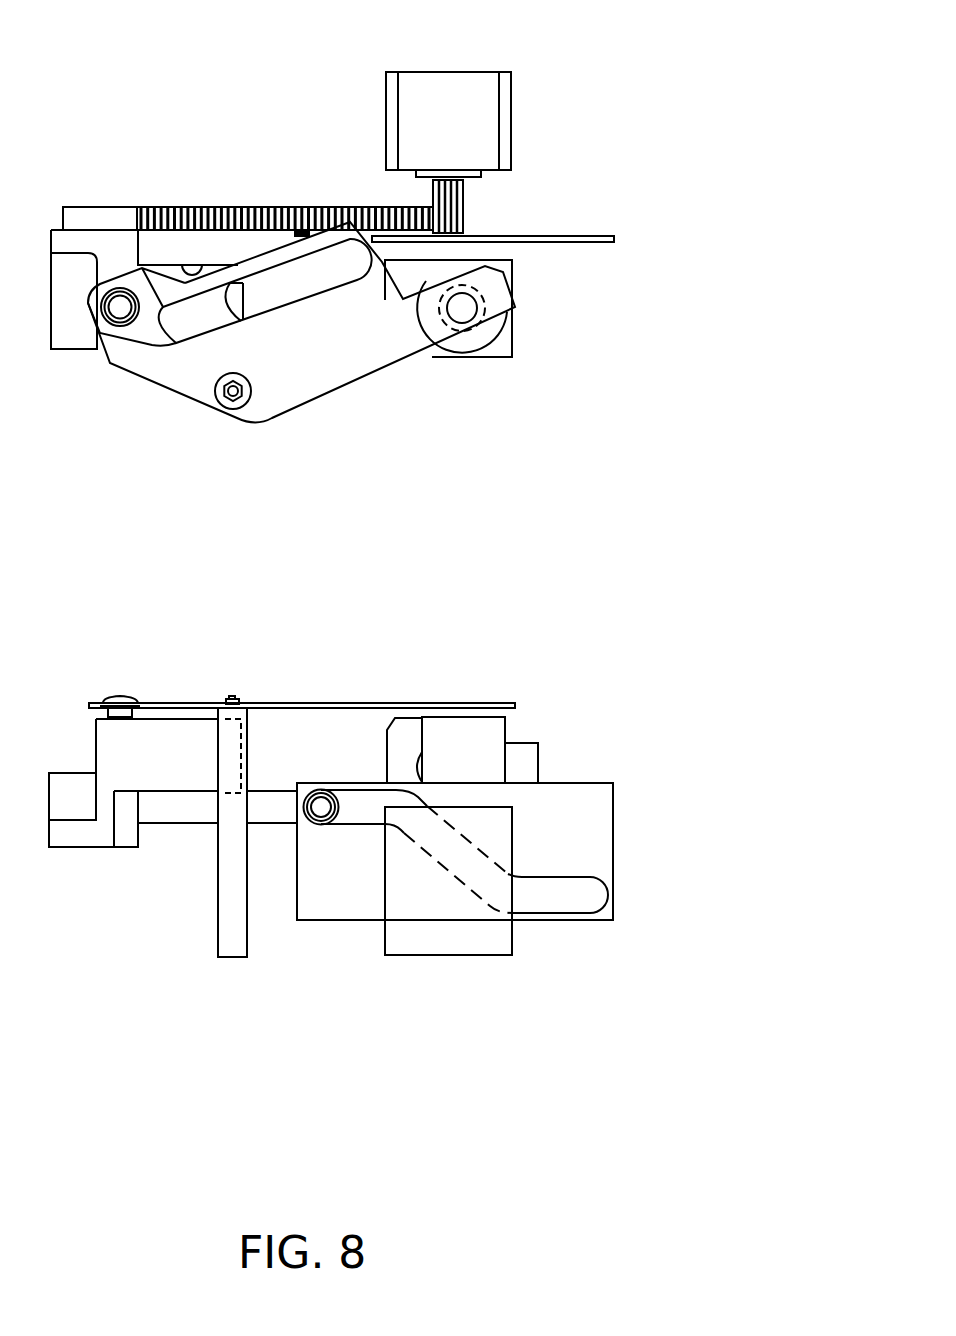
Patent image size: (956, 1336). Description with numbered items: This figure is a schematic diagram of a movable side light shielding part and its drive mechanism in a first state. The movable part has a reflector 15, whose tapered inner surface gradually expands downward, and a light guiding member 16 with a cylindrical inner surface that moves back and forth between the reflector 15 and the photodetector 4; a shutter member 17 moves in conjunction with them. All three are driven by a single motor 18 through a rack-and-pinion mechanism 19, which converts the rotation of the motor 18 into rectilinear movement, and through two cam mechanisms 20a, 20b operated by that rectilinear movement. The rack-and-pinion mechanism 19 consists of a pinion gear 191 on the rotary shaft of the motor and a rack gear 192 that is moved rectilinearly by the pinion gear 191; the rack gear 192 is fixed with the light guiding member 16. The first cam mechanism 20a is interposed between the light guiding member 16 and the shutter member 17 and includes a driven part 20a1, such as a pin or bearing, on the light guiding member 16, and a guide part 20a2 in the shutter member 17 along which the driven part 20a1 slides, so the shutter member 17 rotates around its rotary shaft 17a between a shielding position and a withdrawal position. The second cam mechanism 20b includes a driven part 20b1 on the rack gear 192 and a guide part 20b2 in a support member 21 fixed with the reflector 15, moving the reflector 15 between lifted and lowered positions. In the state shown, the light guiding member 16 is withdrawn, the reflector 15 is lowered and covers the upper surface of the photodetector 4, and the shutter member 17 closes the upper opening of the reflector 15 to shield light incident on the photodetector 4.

The photodetector 4 is at (514, 331).
The reflector 15 is at (472, 350).
The light guiding member 16 is at (166, 265).
The shutter member 17 is at (347, 392).
The rotary shaft 17a is at (234, 410).
The motor 18 is at (447, 72).
The rack-and-pinion mechanism 19 is at (300, 149).
The pinion gear 191 is at (397, 177).
The rack gear 192 is at (251, 207).
The first cam mechanism 20a is at (136, 379).
The driven part 20a1 is at (120, 310).
The guide part 20a2 is at (152, 320).
The second cam mechanism 20b is at (354, 902).
The driven part 20b1 is at (321, 808).
The guide part 20b2 is at (547, 955).
The support member 21 is at (583, 237).